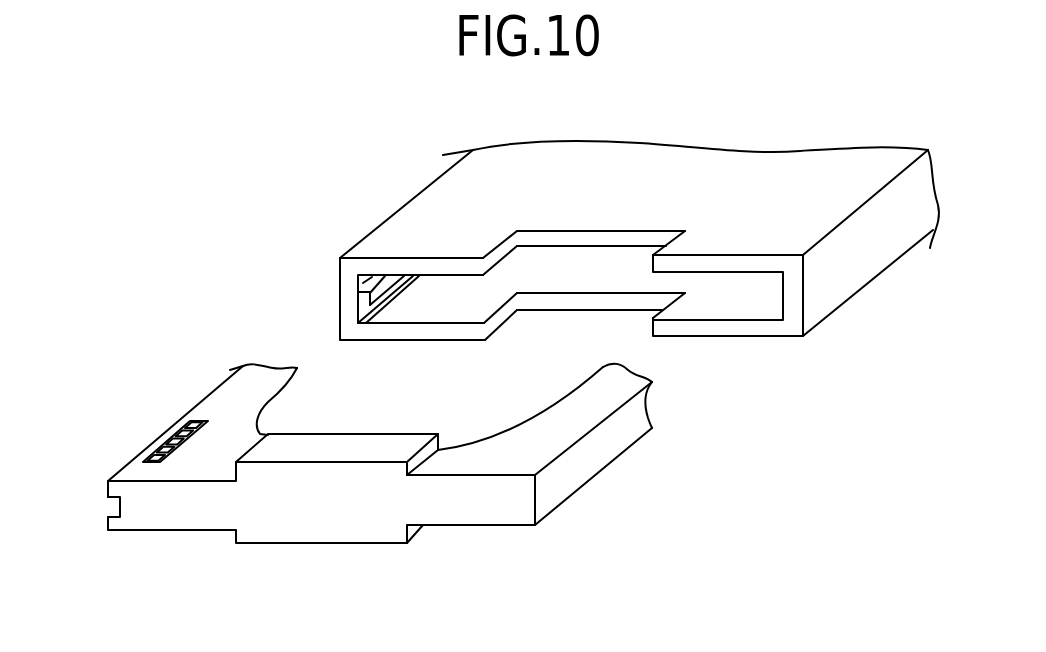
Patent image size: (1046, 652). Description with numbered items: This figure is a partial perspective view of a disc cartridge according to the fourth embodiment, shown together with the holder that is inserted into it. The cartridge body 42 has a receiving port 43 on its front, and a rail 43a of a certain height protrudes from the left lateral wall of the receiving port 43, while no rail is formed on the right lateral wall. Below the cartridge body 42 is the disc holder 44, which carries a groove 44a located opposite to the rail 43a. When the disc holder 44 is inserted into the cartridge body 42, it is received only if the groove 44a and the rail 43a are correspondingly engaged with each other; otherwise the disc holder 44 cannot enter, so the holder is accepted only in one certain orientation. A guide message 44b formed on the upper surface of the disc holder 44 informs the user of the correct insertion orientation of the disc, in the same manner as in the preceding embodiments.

The cartridge body 42 is at (835, 272).
The receiving port 43 is at (460, 310).
The rail 43a is at (363, 301).
The disc holder 44 is at (458, 513).
The groove 44a is at (120, 508).
The guide message 44b is at (182, 421).